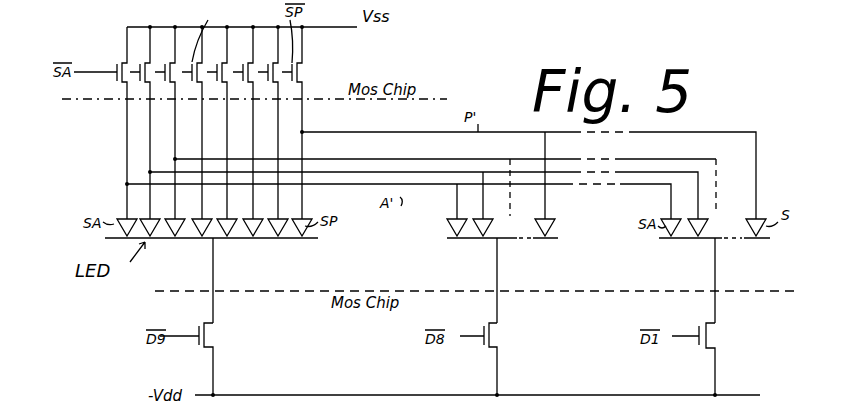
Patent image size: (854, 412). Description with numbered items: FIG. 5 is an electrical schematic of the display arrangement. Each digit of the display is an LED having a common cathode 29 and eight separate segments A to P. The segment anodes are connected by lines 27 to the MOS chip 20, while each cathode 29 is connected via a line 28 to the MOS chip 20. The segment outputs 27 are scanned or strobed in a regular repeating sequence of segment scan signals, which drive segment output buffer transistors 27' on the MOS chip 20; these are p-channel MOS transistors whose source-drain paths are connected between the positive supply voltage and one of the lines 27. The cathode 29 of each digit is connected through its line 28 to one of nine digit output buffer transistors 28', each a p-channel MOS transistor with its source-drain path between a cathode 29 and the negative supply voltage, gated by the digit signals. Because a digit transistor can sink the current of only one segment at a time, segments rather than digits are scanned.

The MOS chip 20 is at (93, 109).
The lines 27 is at (419, 164).
The MOS switching transistors 27' is at (215, 109).
The line 28 is at (464, 280).
The MOS driver transistors 28' is at (461, 360).
The common cathode 29 is at (262, 240).